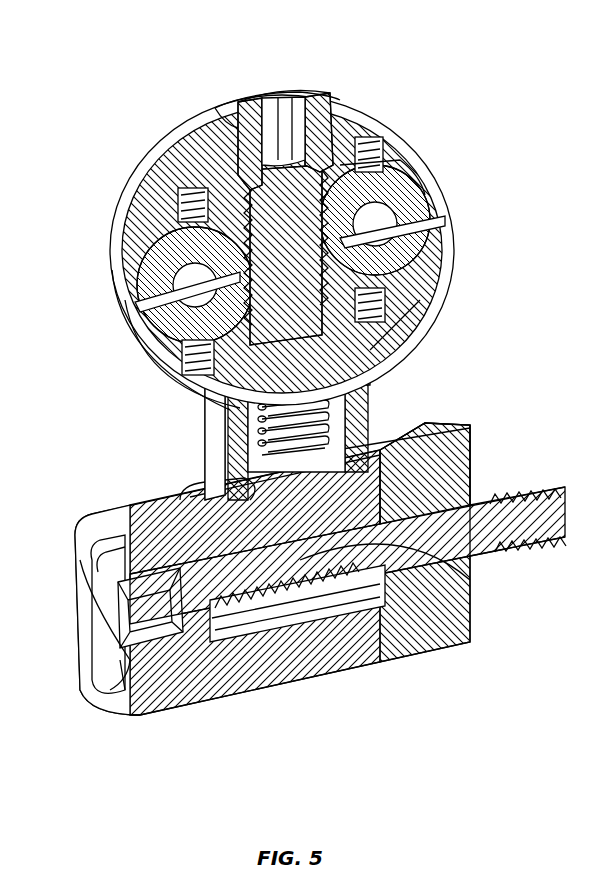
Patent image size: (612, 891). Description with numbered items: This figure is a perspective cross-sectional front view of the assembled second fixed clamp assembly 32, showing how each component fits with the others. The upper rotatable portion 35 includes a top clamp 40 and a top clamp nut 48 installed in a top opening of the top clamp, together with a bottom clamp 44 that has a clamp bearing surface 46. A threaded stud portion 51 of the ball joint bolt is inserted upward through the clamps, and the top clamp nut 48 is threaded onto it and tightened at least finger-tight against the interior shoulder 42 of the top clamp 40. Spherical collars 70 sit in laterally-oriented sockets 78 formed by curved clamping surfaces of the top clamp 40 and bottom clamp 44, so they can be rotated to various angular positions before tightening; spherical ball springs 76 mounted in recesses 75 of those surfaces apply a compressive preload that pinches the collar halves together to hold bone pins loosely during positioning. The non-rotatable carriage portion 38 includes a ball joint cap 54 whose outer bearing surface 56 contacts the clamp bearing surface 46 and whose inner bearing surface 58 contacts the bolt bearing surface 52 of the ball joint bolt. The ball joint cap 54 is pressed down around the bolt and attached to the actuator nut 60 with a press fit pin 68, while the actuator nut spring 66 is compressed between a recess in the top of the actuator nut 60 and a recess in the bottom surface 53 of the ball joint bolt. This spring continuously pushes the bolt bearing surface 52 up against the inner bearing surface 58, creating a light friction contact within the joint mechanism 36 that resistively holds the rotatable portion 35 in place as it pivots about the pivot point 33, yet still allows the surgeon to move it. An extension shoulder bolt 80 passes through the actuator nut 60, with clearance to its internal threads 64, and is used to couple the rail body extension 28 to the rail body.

The rail body extension 28 is at (128, 688).
The clamp assembly 32 is at (205, 87).
The pivot point 33 is at (305, 428).
The rotatable portion 35 is at (386, 105).
The joint mechanism 36 is at (420, 325).
The carriage portion 38 is at (410, 388).
The top clamp 40 is at (128, 190).
The interior shoulder 42 is at (228, 162).
The bottom clamp 44 is at (115, 322).
The clamp bearing surface 46 is at (430, 240).
The top clamp nut 48 is at (320, 95).
The threaded stud portion 51 is at (268, 97).
The bolt bearing surface 52 is at (420, 272).
The bottom surface 53 is at (400, 352).
The ball joint cap 54 is at (185, 497).
The outer bearing surface 56 is at (230, 386).
The inner bearing surface 58 is at (352, 380).
The actuator nut 60 is at (472, 573).
The internal threads 64 is at (378, 665).
The actuator nut spring 66 is at (410, 450).
The press fit pin 68 is at (200, 473).
The spherical collar 70 is at (440, 225).
The spring seat 75 is at (400, 165).
The spherical ball spring 76 is at (180, 200).
The socket 78 is at (160, 270).
The extension shoulder bolt 80 is at (100, 598).